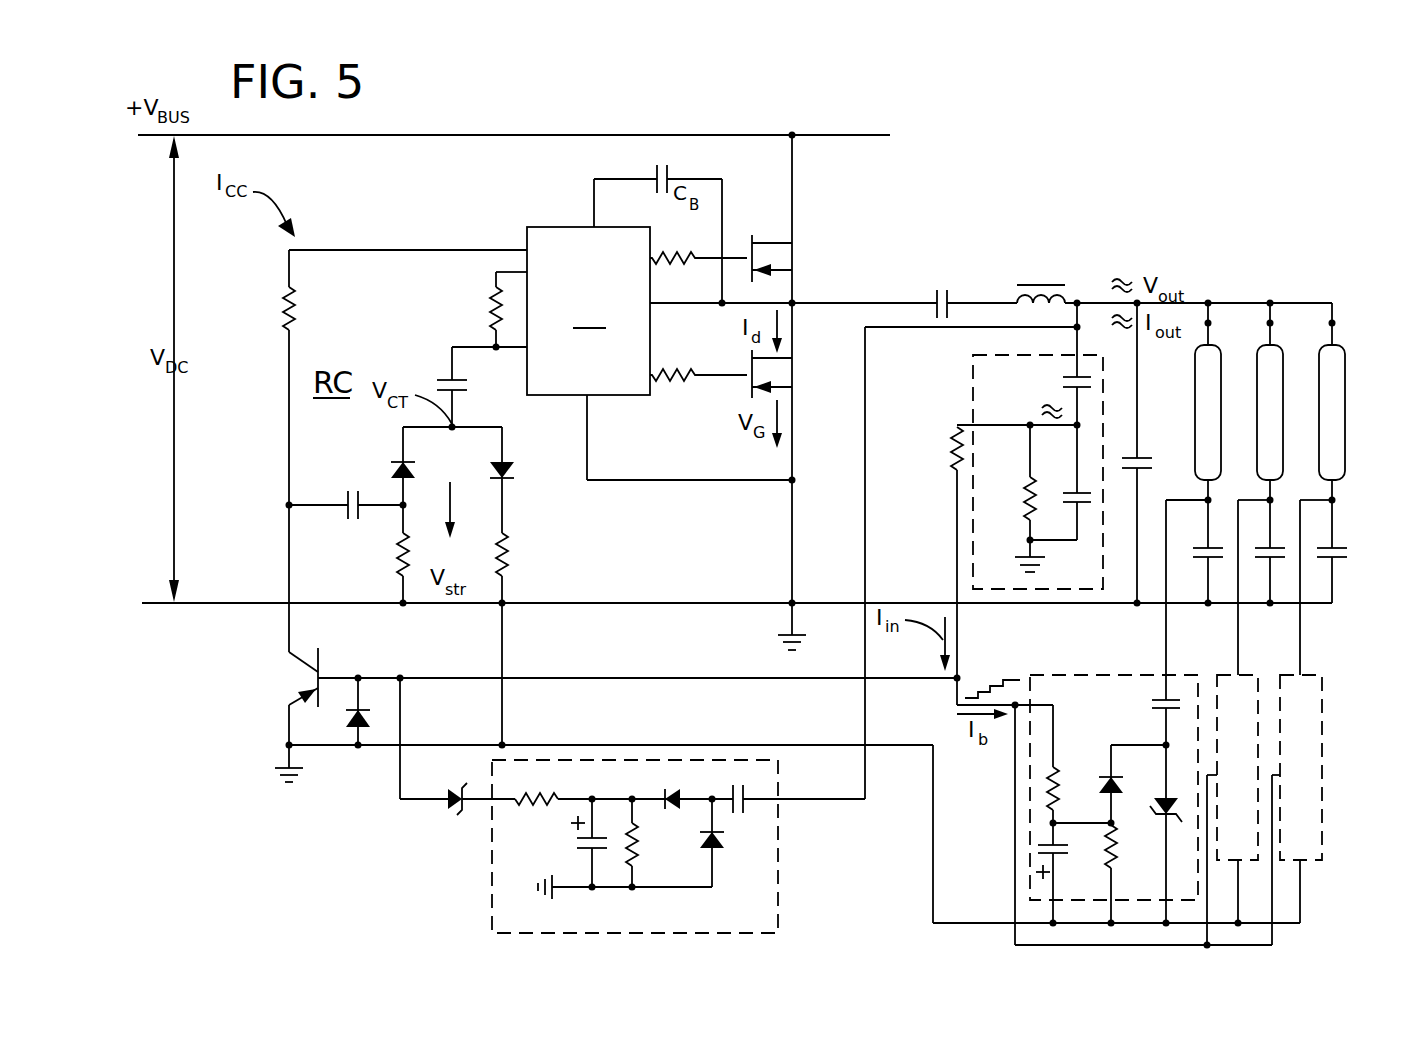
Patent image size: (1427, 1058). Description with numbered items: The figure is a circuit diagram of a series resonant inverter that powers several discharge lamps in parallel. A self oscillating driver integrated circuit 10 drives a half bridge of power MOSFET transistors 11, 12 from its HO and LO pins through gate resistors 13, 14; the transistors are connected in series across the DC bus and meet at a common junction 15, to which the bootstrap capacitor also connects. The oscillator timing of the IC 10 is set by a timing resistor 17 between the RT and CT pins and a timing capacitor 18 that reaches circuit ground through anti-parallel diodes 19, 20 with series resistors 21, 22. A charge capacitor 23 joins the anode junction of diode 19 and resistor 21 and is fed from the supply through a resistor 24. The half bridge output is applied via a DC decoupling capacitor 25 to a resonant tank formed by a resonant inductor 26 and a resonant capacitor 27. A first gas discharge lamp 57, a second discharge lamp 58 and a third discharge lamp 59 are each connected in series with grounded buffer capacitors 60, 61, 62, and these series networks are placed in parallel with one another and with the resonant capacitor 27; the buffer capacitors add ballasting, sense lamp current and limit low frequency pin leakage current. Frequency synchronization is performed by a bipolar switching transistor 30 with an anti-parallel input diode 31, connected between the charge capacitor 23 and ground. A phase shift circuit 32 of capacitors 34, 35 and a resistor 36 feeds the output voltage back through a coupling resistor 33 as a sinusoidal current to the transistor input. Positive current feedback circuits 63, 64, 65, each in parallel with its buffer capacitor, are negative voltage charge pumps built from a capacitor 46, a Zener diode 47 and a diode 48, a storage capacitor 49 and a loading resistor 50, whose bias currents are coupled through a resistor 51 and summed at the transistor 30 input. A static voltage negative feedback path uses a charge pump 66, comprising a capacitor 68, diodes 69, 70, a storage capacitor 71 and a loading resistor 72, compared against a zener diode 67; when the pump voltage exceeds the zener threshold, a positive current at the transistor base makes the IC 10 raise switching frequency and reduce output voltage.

The self oscillating driver integrated circuit 10 is at (588, 309).
The power MOSFET transistor 11 is at (770, 266).
The power MOSFET transistor 12 is at (770, 385).
The gate resistor 13 is at (688, 254).
The gate resistor 14 is at (682, 380).
The common junction 15 is at (793, 303).
The timing resistor 17 is at (492, 305).
The timing capacitor 18 is at (442, 378).
The diode 19 is at (390, 477).
The diode 20 is at (512, 460).
The series resistor 21 is at (398, 555).
The series resistor 22 is at (508, 555).
The charge capacitor 23 is at (345, 500).
The resistor 24 is at (295, 308).
The DC decoupling capacitor 25 is at (951, 297).
The resonant inductor 26 is at (1040, 285).
The resonant capacitor 27 is at (1148, 457).
The bipolar switching transistor 30 is at (316, 680).
The anti-parallel input diode 31 is at (611, 725).
The phase shift circuit 32 is at (973, 405).
The coupling resistor 33 is at (952, 452).
The capacitor 34 is at (1073, 380).
The capacitor 35 is at (1073, 492).
The resistor 36 is at (1025, 500).
The capacitor 46 is at (1153, 702).
The Zener diode 47 is at (1160, 797).
The diode 48 is at (1092, 790).
The storage capacitor 49 is at (1036, 845).
The loading resistor 50 is at (1114, 848).
The resistor 51 is at (1050, 790).
The first gas discharge lamp 57 is at (1198, 380).
The second discharge lamp 58 is at (1255, 370).
The third discharge lamp 59 is at (1317, 370).
The buffer capacitor 60 is at (1214, 547).
The buffer capacitor 61 is at (1277, 547).
The buffer capacitor 62 is at (1342, 547).
The positive current feedback circuit 63 is at (1105, 675).
The positive current feedback circuit 64 is at (1245, 675).
The positive current feedback circuit 65 is at (1322, 750).
The charge pump 66 is at (492, 892).
The zener diode 67 is at (450, 806).
The capacitor 68 is at (746, 808).
The diode 69 is at (730, 840).
The diode 70 is at (666, 794).
The storage capacitor 71 is at (578, 855).
The loading resistor 72 is at (630, 835).